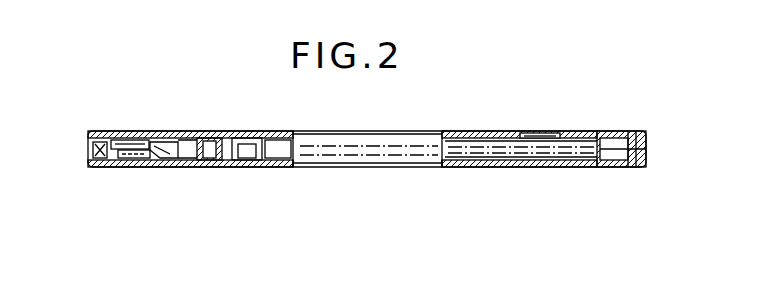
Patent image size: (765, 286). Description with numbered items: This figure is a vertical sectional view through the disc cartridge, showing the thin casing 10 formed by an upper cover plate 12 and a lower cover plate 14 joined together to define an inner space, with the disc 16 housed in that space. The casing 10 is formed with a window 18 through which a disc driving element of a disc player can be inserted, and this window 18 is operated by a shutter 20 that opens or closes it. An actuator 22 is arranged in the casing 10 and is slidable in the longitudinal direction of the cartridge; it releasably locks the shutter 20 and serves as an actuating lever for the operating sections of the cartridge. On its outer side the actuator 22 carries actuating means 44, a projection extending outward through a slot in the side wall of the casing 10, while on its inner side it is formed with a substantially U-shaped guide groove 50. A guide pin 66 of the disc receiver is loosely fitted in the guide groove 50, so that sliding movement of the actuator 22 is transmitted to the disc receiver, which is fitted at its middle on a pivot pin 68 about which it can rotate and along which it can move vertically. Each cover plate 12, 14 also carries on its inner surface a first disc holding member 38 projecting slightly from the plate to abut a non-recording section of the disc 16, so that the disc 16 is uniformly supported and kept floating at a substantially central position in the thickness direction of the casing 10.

The casing 10 is at (660, 120).
The upper cover plate 12 is at (202, 131).
The lower cover plate 14 is at (198, 167).
The disc 16 is at (400, 153).
The window 18 is at (380, 135).
The shutter 20 is at (431, 131).
The actuator 22 is at (160, 158).
The first disc holding member 38 is at (531, 131).
The actuating means 44 is at (93, 157).
The guide groove 50 is at (131, 142).
The guide pin 66 is at (150, 148).
The pivot pin 68 is at (238, 131).